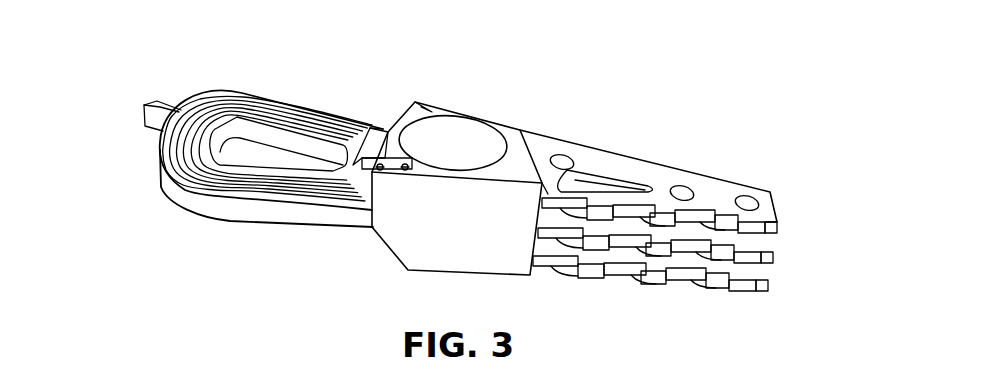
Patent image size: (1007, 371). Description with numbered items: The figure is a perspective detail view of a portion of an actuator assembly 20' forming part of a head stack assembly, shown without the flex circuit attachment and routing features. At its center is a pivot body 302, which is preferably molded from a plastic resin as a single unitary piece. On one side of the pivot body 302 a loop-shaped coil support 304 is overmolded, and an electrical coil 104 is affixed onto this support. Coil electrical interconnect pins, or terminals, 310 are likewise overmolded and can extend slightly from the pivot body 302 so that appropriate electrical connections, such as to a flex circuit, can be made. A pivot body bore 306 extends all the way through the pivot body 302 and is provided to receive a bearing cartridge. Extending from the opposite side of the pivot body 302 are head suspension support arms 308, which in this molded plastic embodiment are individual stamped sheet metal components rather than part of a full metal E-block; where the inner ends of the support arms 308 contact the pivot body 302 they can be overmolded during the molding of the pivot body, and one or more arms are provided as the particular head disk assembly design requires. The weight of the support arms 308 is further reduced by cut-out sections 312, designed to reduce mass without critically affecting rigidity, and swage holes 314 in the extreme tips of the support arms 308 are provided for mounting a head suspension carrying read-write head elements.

The actuator assembly 20' is at (648, 123).
The electrical coil 104 is at (207, 108).
The pivot body 302 is at (500, 127).
The loop-shaped coil support 304 is at (285, 215).
The pivot body bore 306 is at (435, 140).
The head suspension support arms 308 is at (778, 232).
The coil electrical interconnect pins 310 is at (380, 172).
The cut-out sections 312 is at (600, 183).
The swage holes 314 is at (748, 203).